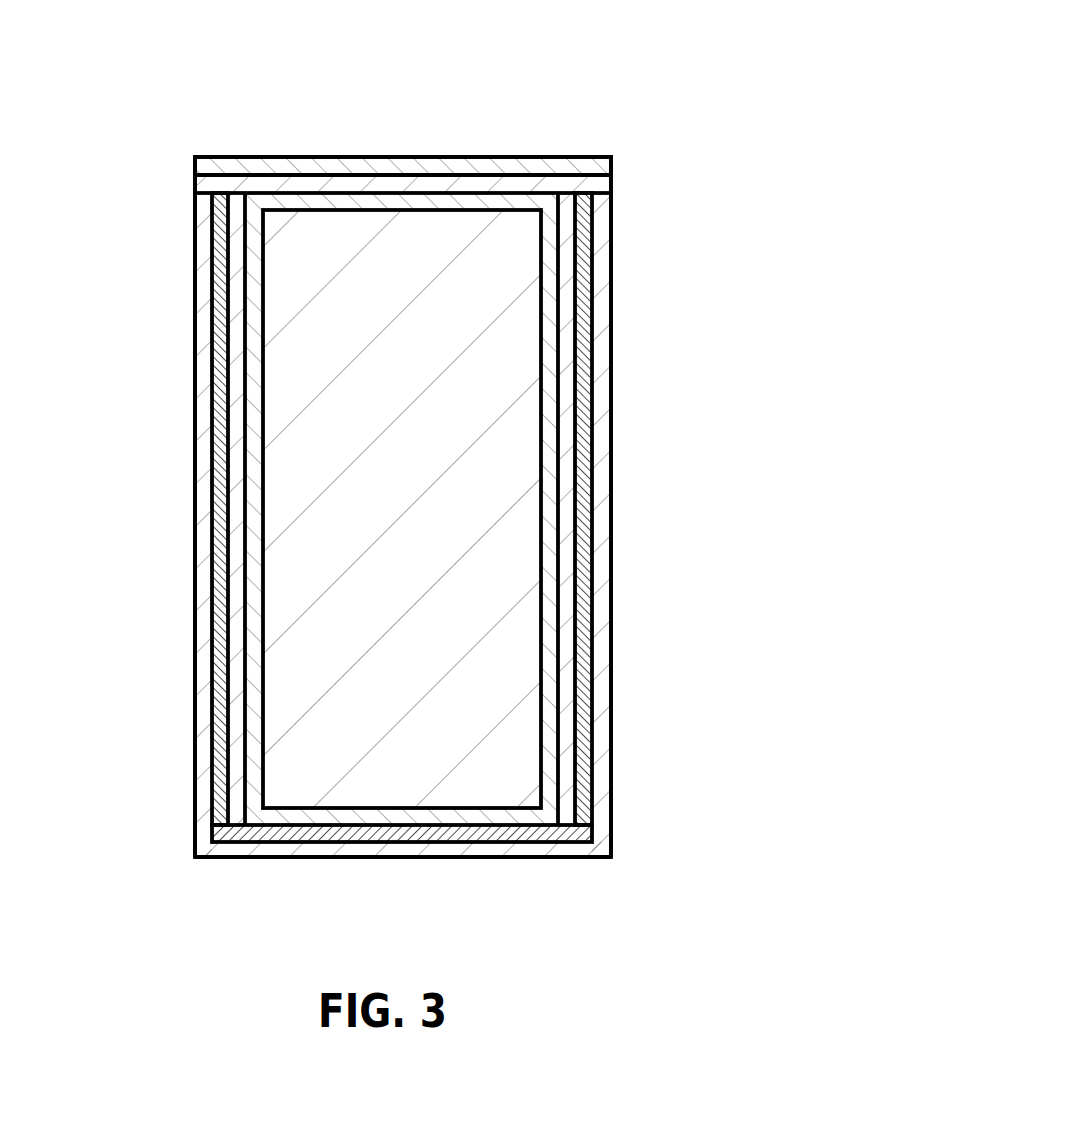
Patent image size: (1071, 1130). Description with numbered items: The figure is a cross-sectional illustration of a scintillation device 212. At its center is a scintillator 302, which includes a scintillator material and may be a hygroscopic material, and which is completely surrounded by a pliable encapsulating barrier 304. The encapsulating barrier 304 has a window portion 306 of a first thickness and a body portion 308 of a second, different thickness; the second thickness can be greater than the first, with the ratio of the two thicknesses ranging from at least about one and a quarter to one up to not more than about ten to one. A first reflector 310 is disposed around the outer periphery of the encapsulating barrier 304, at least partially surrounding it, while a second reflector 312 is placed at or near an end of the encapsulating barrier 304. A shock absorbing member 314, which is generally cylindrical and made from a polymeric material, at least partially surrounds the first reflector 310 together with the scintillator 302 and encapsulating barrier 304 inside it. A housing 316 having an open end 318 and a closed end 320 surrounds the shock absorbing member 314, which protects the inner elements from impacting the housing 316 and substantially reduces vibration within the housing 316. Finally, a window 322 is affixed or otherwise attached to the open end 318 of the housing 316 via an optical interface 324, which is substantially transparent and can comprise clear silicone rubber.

The scintillation device 212 is at (641, 103).
The scintillator 302 is at (513, 531).
The encapsulating barrier 304 is at (144, 549).
The window portion 306 is at (485, 509).
The body portion 308 is at (635, 509).
The first reflector 310 is at (644, 509).
The second reflector 312 is at (451, 892).
The shock absorbing member 314 is at (146, 509).
The housing 316 is at (130, 525).
The open end 318 is at (686, 517).
The closed end 320 is at (388, 892).
The window 322 is at (329, 131).
The optical interface 324 is at (334, 229).